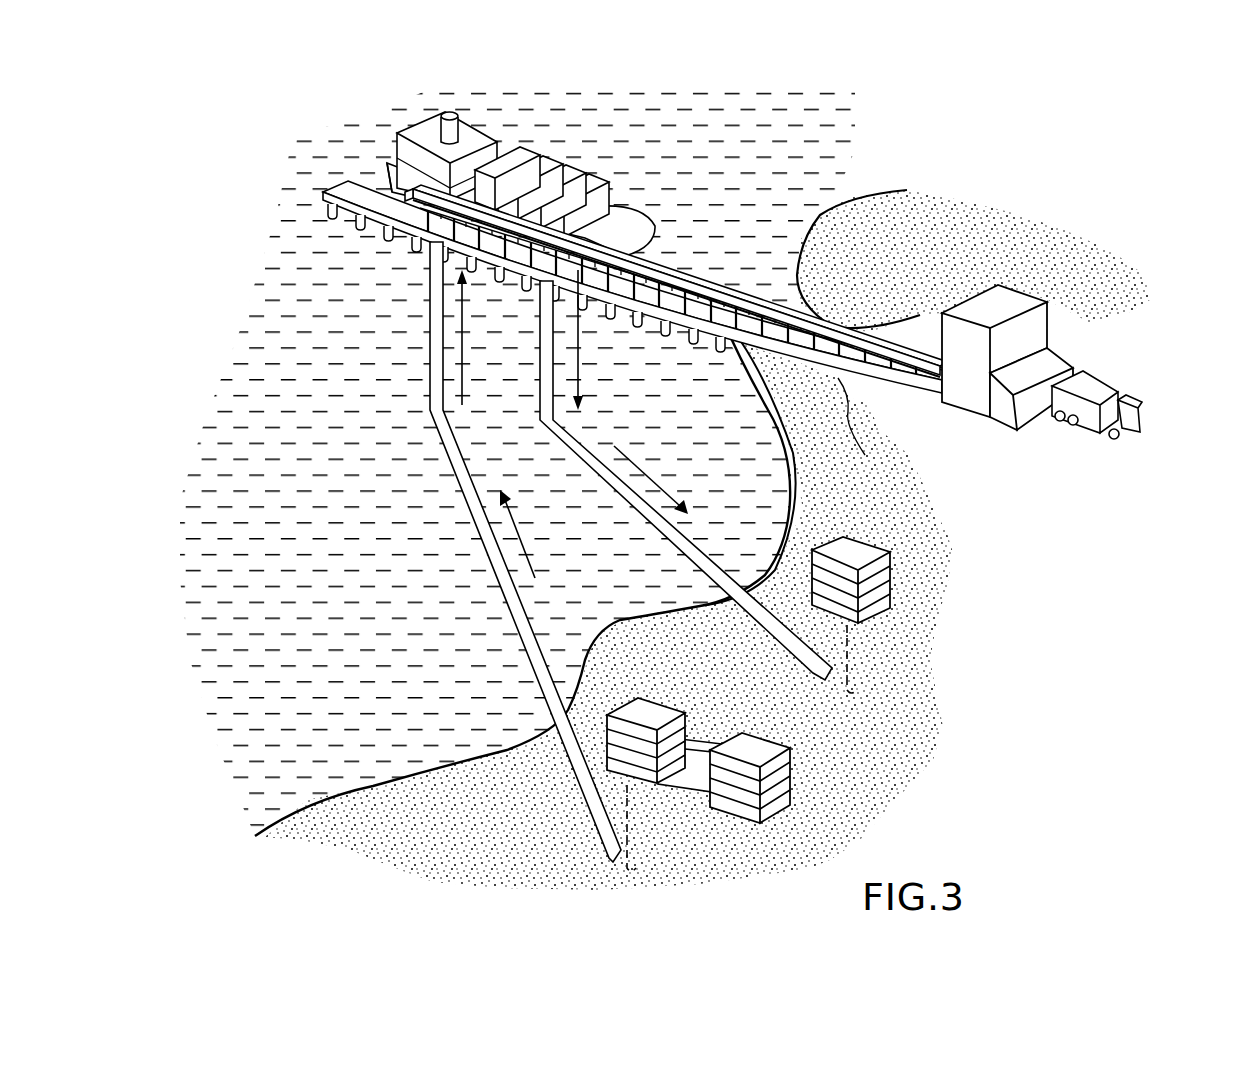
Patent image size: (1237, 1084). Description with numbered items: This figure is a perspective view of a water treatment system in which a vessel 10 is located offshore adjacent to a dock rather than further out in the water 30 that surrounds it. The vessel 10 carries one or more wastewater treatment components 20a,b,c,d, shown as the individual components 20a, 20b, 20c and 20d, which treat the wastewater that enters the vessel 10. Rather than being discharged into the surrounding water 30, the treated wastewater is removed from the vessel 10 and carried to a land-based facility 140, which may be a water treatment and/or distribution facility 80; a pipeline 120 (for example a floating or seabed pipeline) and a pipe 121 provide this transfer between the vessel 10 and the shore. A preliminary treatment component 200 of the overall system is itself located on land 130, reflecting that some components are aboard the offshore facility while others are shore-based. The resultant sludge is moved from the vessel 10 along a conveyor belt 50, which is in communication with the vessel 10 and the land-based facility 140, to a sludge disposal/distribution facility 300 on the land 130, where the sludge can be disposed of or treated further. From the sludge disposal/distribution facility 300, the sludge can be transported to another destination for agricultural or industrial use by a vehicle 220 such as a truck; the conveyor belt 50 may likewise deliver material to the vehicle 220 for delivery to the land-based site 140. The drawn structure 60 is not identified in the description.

The vessel 10 is at (453, 175).
The wastewater treatment components 20a,b,c,d is at (567, 166).
The wastewater treatment component 20a is at (507, 178).
The wastewater treatment component 20b is at (530, 187).
The wastewater treatment component 20c is at (553, 196).
The wastewater treatment component 20d is at (576, 205).
The water 30 is at (752, 208).
The conveyor belt 50 is at (826, 348).
The processing facility 60 is at (770, 797).
The water treatment and/or distribution facility 80 is at (887, 583).
The pipeline 120 is at (430, 378).
The pipe 121 is at (582, 463).
The land 130 is at (988, 458).
The land-based facility 140 is at (800, 870).
The preliminary treatment component 200 is at (642, 783).
The vehicle 220 is at (1133, 403).
The sludge disposal/distribution facility 300 is at (1020, 332).